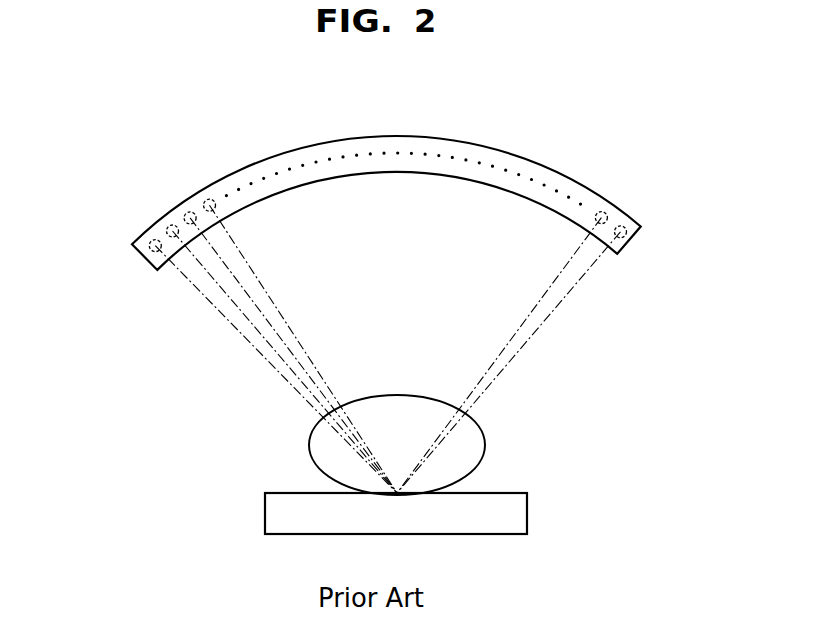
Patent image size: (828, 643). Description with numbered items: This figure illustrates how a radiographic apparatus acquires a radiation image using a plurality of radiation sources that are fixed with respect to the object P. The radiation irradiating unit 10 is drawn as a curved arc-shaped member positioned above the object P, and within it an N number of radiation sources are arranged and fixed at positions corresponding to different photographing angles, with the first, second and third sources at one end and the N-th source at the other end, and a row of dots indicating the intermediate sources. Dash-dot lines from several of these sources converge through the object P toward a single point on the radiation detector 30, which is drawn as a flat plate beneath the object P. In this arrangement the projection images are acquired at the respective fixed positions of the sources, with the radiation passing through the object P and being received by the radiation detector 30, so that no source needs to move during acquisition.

The radiation irradiating unit 10 is at (513, 154).
The object P is at (472, 447).
The radiation detector 30 is at (513, 512).